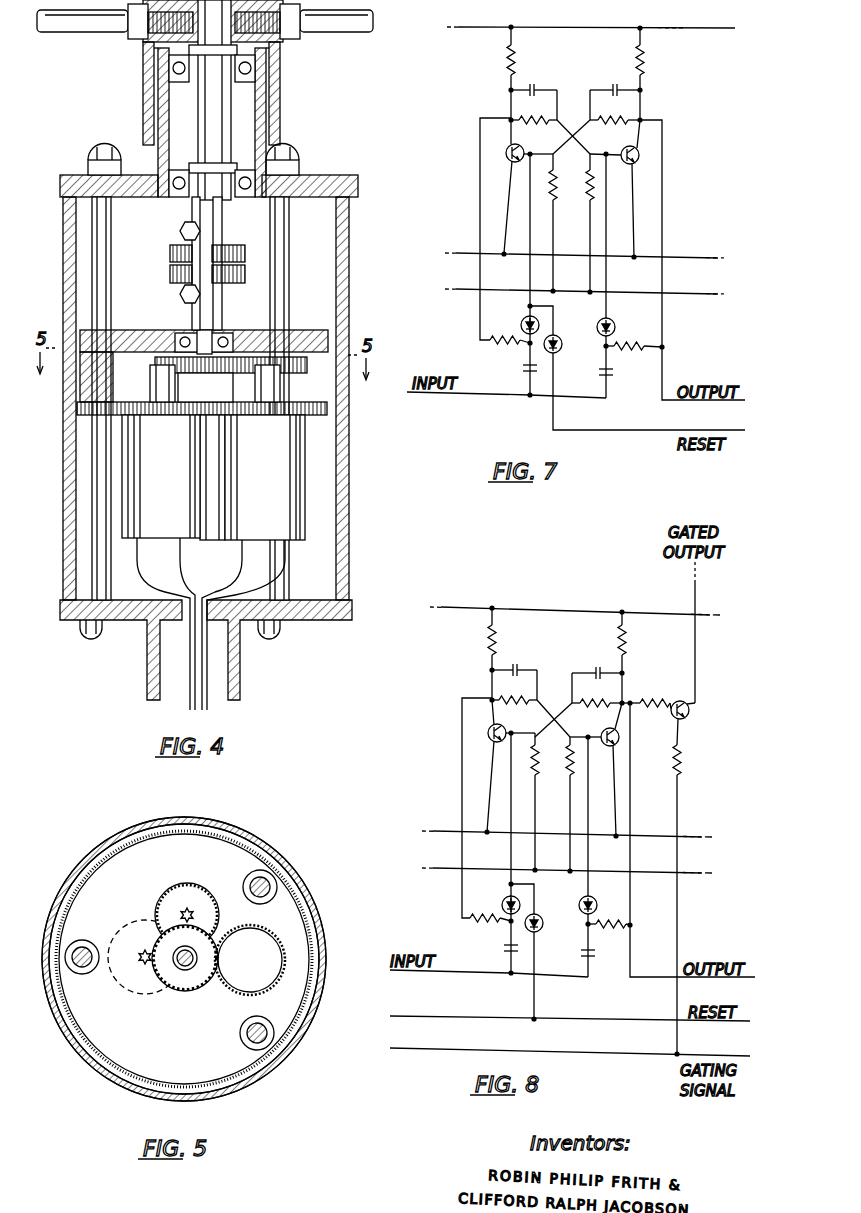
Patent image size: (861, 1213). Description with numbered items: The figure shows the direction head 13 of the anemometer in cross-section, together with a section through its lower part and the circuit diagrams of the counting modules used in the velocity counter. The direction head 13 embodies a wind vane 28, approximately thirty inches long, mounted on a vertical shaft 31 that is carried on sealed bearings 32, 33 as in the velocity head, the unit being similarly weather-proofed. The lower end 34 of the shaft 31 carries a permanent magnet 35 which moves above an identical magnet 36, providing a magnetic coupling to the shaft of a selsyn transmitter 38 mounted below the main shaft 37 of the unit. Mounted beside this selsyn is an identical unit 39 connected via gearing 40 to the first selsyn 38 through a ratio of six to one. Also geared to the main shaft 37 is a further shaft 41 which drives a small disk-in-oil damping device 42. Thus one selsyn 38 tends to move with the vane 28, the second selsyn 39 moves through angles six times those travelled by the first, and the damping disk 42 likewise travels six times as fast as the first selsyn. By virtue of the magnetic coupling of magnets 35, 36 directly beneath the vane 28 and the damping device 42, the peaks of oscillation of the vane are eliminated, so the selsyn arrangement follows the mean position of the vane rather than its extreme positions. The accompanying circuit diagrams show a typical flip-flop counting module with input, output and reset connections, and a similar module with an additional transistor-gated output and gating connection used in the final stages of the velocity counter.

In FIG. 4, the direction head 13 is at (347, 305).
In FIG. 5, the direction head 13 is at (279, 861).
In FIG. 4, the wind vane 28 is at (95, 24).
In FIG. 4, the vertical shaft 31 is at (216, 133).
In FIG. 4, the sealed bearing 32 is at (174, 70).
In FIG. 4, the sealed bearing 33 is at (162, 168).
In FIG. 4, the lower end of the shaft 34 is at (224, 214).
In FIG. 4, the permanent magnet 35 is at (170, 252).
In FIG. 4, the permanent magnet 36 is at (170, 273).
In FIG. 4, the main shaft 37 is at (189, 302).
In FIG. 5, the main shaft 37 is at (180, 972).
In FIG. 4, the selsyn transmitter 38 is at (300, 472).
In FIG. 5, the selsyn transmitter 38 is at (226, 990).
In FIG. 4, the selsyn 39 is at (135, 500).
In FIG. 5, the selsyn 39 is at (120, 978).
In FIG. 4, the gearing 40 is at (158, 363).
In FIG. 5, the gearing 40 is at (150, 967).
In FIG. 5, the further shaft 41 is at (186, 910).
In FIG. 4, the damping device 42 is at (207, 398).
In FIG. 5, the damping device 42 is at (197, 900).